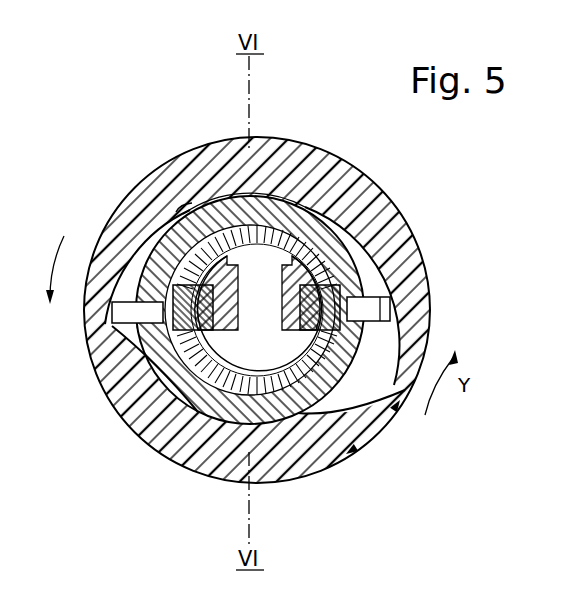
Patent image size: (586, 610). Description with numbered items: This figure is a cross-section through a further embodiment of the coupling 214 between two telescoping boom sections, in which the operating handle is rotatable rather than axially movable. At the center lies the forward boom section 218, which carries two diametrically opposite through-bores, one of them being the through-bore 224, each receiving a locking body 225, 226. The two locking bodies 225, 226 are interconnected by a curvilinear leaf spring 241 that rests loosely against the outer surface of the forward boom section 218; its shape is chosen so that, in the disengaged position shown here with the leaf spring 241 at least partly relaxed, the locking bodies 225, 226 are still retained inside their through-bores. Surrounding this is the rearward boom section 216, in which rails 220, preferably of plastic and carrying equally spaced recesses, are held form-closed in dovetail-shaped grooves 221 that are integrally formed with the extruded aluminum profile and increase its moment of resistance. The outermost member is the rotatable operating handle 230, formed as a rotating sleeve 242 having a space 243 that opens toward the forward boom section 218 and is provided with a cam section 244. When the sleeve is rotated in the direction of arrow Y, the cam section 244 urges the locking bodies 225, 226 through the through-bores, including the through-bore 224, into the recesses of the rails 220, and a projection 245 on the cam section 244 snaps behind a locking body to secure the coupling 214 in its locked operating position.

The coupling 214 is at (335, 163).
The rearward boom section 216 is at (282, 202).
The forward boom section 218 is at (153, 436).
The rail 220 is at (282, 322).
The dovetail-shaped groove 221 is at (335, 272).
The through-bore 224 is at (388, 300).
The locking body 225 is at (110, 322).
The locking body 226 is at (376, 315).
The rotatable operating handle 230 is at (400, 224).
The curvilinear leaf spring 241 is at (124, 275).
The rotating sleeve 242 is at (357, 186).
The space 243 is at (323, 414).
The cam section 244 is at (352, 412).
The projection 245 is at (182, 205).